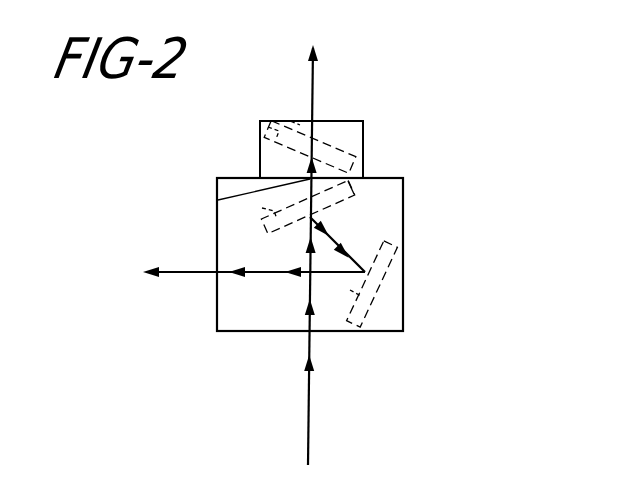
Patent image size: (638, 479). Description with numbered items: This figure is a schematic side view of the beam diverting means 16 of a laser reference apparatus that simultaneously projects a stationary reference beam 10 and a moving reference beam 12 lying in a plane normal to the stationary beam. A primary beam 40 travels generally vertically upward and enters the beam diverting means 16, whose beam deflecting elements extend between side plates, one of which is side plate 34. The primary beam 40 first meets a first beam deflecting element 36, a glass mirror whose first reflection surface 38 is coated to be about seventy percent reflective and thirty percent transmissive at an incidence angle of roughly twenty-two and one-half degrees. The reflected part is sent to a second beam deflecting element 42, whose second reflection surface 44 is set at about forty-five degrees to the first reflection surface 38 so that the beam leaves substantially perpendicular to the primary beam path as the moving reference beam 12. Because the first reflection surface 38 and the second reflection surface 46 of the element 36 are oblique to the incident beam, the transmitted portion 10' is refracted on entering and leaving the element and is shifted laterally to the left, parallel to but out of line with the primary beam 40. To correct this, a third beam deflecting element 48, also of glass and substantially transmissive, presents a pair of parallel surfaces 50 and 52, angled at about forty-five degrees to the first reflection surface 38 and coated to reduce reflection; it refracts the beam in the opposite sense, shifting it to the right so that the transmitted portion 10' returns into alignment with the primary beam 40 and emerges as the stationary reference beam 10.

The stationary reference beam 10 is at (339, 195).
The transmissive portion of the primary beam 10' is at (237, 197).
The moving reference beam 12 is at (181, 276).
The beam diverting means 16 is at (395, 127).
The side plate 34 is at (405, 197).
The first beam deflecting element 36 is at (352, 186).
The first reflection surface 38 is at (333, 210).
The primary beam 40 is at (311, 412).
The second beam deflecting element 42 is at (360, 333).
The second reflection surface 44 is at (355, 294).
The second reflection surface of the element 36 46 is at (258, 214).
The third beam deflecting element 48 is at (266, 127).
The parallel surface 50 is at (295, 123).
The parallel surface 52 is at (287, 148).